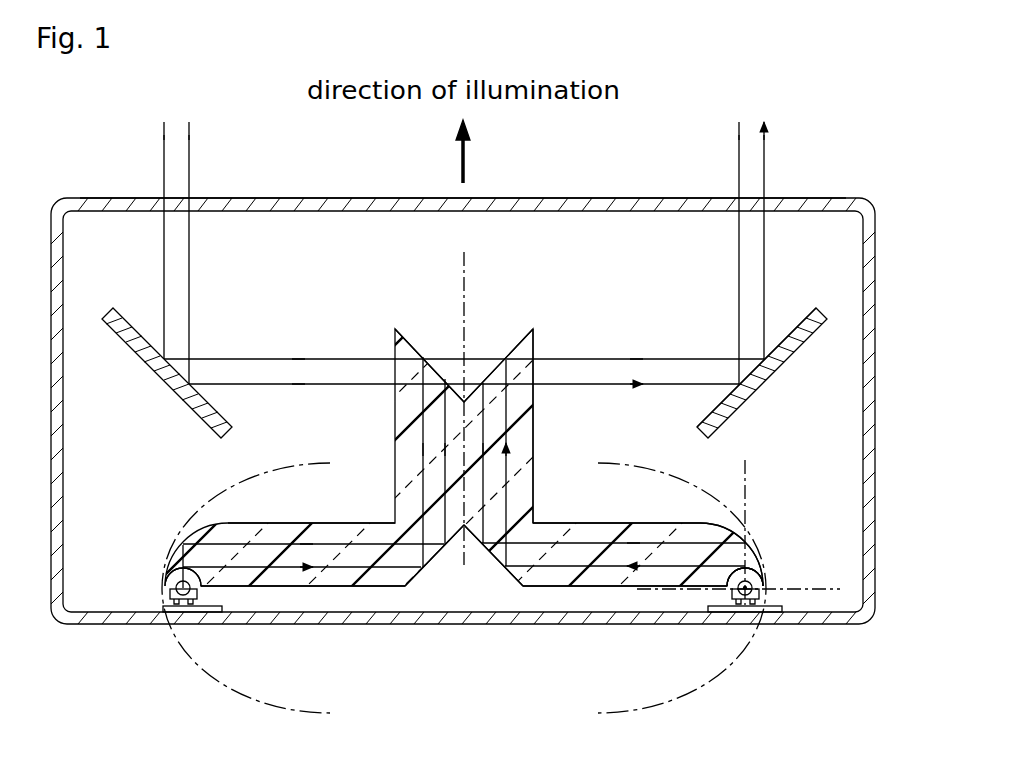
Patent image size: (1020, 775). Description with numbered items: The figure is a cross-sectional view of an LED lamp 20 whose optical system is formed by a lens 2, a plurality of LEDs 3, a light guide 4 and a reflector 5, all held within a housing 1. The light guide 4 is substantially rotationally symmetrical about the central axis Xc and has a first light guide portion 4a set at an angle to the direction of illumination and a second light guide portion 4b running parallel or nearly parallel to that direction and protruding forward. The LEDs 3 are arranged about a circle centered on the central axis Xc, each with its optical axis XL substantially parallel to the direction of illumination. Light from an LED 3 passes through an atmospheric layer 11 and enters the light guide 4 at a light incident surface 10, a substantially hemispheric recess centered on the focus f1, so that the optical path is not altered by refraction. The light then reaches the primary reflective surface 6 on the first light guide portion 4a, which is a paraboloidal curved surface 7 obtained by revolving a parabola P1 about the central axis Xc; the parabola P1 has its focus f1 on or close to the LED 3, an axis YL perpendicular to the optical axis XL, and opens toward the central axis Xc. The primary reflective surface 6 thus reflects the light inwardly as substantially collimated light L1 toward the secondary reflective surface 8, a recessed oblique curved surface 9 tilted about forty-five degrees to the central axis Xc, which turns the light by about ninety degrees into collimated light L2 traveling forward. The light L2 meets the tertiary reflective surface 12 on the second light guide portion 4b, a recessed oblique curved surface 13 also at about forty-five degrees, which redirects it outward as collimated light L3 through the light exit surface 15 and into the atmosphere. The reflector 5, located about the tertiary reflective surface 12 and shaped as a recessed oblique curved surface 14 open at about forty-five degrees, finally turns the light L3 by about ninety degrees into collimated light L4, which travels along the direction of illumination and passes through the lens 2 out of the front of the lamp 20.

The housing 1 is at (876, 411).
The lens 2 is at (610, 198).
The LED 3 is at (745, 605).
The light guide 4 is at (538, 428).
The first light guide portion 4a is at (653, 530).
The second light guide portion 4b is at (395, 460).
The reflector 5 is at (785, 352).
The primary reflective surface 6 is at (734, 530).
The paraboloidal curved surface 7 is at (753, 552).
The secondary reflective surface 8 is at (495, 563).
The recessed oblique curved surface 9 is at (519, 577).
The light incident surface 10 is at (760, 580).
The atmospheric layer 11 is at (727, 578).
The tertiary reflective surface 12 is at (518, 347).
The recessed oblique curved surface 13 is at (524, 334).
The recessed oblique curved surface 14 is at (797, 326).
The light exit surface 15 is at (533, 374).
The lamp 20 is at (814, 162).
The substantially collimated light L1 is at (582, 542).
The substantially collimated light L2 is at (487, 470).
The substantially collimated light L3 is at (600, 388).
The substantially collimated light L4 is at (738, 259).
The central axis Xc is at (468, 270).
The optical axis XL is at (748, 478).
The axis YL is at (825, 586).
The parabola P1 is at (645, 480).
The focus f1 is at (750, 590).